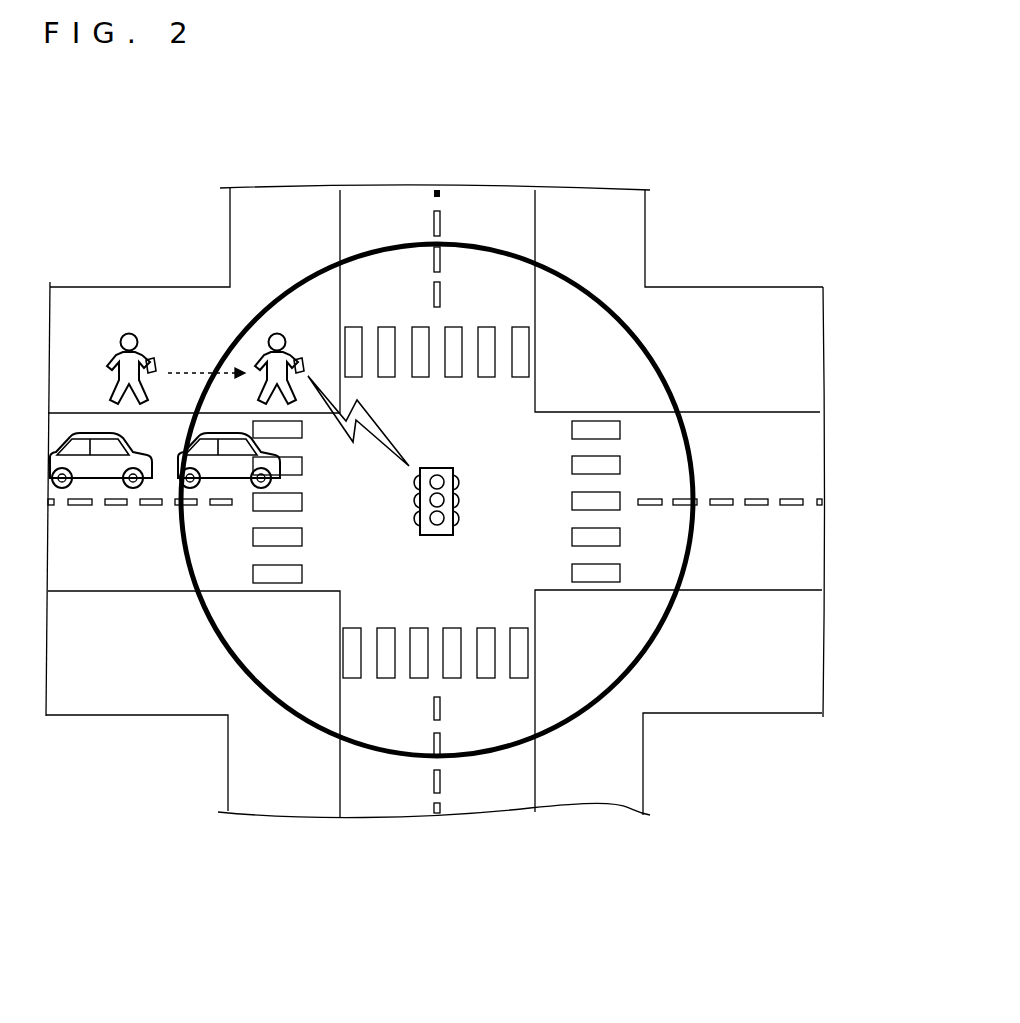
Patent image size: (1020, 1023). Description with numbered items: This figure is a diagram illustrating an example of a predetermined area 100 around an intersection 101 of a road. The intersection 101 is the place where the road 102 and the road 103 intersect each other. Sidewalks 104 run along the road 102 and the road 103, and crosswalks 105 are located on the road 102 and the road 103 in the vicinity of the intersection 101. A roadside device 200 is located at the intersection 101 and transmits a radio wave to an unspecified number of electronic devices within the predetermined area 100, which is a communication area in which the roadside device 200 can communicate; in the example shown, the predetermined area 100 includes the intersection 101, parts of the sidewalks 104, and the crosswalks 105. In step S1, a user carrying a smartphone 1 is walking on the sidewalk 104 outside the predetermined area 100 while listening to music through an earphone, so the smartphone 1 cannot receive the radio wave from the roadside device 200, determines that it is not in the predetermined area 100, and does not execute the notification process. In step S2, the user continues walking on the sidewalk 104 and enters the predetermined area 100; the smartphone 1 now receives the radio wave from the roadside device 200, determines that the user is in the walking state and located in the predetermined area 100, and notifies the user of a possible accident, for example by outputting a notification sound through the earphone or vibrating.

The smartphone 1 is at (155, 357).
The predetermined area 100 is at (668, 382).
The intersection 101 is at (506, 431).
The road 102 is at (780, 550).
The road 103 is at (486, 790).
The sidewalk 104 is at (285, 210).
The crosswalk 105 is at (487, 352).
The roadside device 200 is at (437, 467).
The step S1 is at (132, 332).
The step S2 is at (275, 322).